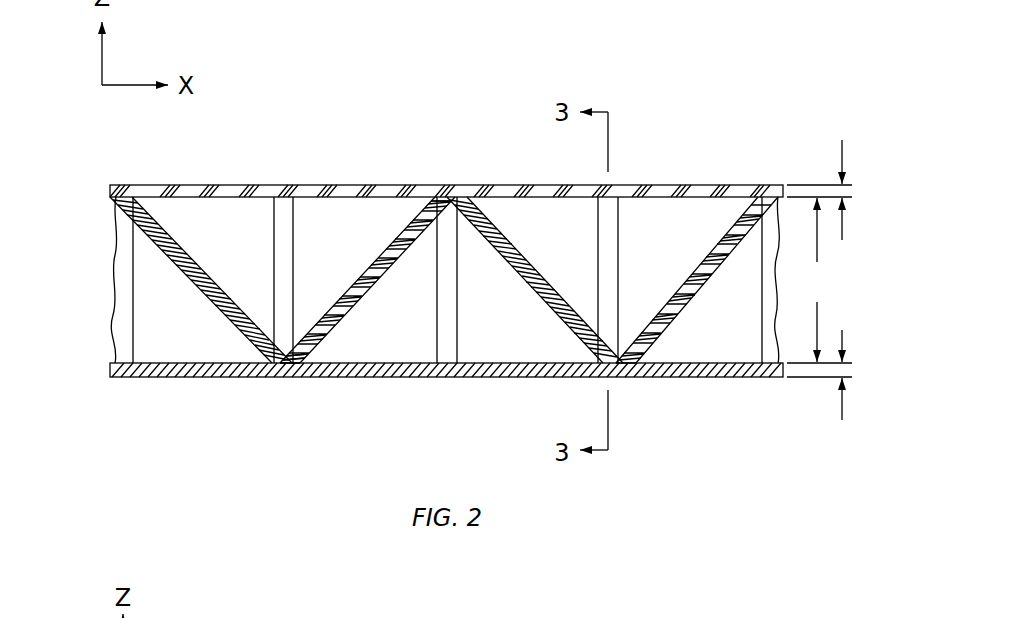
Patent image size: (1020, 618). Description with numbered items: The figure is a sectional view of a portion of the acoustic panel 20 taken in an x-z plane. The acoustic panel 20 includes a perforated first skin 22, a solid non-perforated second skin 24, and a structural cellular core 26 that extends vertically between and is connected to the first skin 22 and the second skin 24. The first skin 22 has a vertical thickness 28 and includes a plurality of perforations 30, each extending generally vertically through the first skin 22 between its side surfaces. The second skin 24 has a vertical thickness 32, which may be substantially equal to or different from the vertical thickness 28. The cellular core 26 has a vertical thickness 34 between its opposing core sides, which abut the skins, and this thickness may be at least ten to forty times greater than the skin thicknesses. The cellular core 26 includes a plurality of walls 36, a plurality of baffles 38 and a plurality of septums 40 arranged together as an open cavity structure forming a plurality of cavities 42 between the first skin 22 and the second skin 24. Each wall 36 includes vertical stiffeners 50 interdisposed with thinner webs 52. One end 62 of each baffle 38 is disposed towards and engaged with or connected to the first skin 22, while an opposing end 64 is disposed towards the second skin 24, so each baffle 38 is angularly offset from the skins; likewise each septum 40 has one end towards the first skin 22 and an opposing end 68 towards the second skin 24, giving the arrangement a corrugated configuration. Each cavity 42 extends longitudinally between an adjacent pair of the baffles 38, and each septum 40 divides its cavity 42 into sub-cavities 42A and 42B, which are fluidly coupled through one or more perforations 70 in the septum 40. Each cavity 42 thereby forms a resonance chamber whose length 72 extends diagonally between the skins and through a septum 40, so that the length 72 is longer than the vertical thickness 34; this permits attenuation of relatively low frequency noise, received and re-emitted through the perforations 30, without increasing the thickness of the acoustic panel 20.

The acoustic panel 20 is at (733, 83).
The first skin 22 is at (120, 184).
The second skin 24 is at (120, 377).
The cellular core 26 is at (118, 288).
The vertical thickness 28 is at (842, 158).
The perforations 30 is at (337, 185).
The vertical thickness 32 is at (840, 412).
The vertical thickness 34 is at (817, 280).
The walls 36 is at (193, 342).
The baffles 38 is at (238, 342).
The septums 40 is at (332, 335).
The cavities 42 is at (148, 322).
The sub-cavity 42A is at (666, 227).
The sub-cavity 42B is at (711, 342).
The vertical stiffeners 50 is at (436, 273).
The webs 52 is at (374, 343).
The end 62 is at (443, 184).
The end 64 is at (295, 362).
The end 68 is at (297, 355).
The perforations 70 is at (666, 304).
The length 72 is at (479, 201).